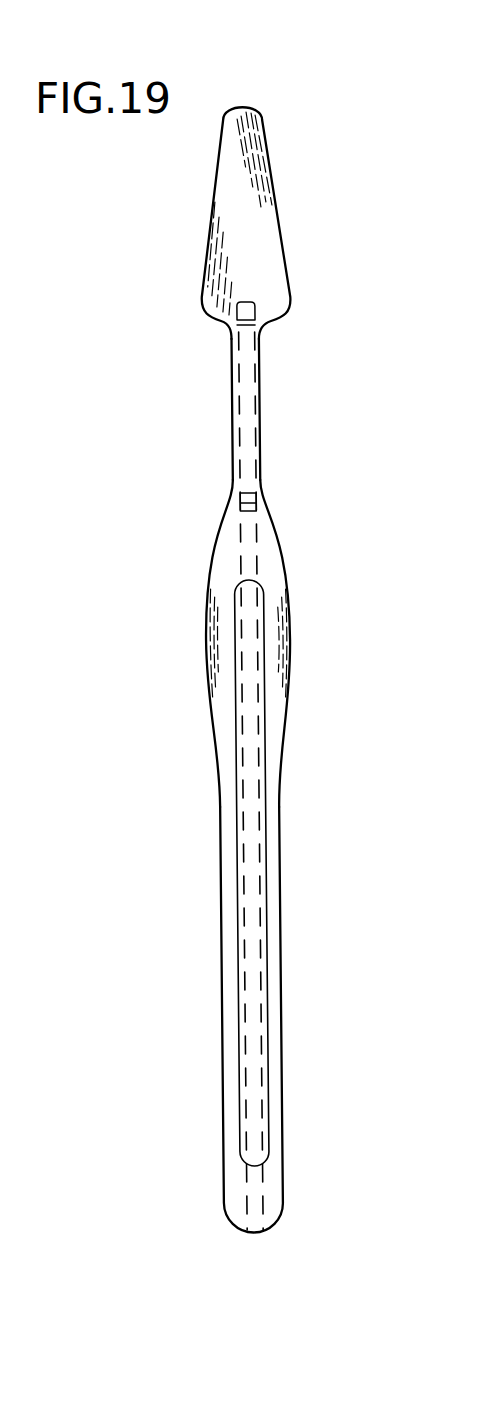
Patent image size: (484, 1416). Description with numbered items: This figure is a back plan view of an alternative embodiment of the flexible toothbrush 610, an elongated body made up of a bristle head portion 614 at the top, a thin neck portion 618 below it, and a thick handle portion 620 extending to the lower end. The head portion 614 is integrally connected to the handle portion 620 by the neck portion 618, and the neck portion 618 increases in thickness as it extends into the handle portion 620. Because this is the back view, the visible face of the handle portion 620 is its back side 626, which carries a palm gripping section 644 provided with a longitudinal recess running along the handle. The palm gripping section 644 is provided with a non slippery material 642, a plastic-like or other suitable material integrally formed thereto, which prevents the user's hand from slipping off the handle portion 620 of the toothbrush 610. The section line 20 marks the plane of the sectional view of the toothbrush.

The section line 20- 20 is at (241, 100).
The flexible toothbrush 610 is at (165, 389).
The bristle head portion 614 is at (213, 243).
The thin neck portion 618 is at (262, 387).
The back side 626 is at (280, 612).
The thick handle portion 620 is at (273, 918).
The non slippery material 642 is at (238, 787).
The palm gripping section 644 is at (232, 1090).